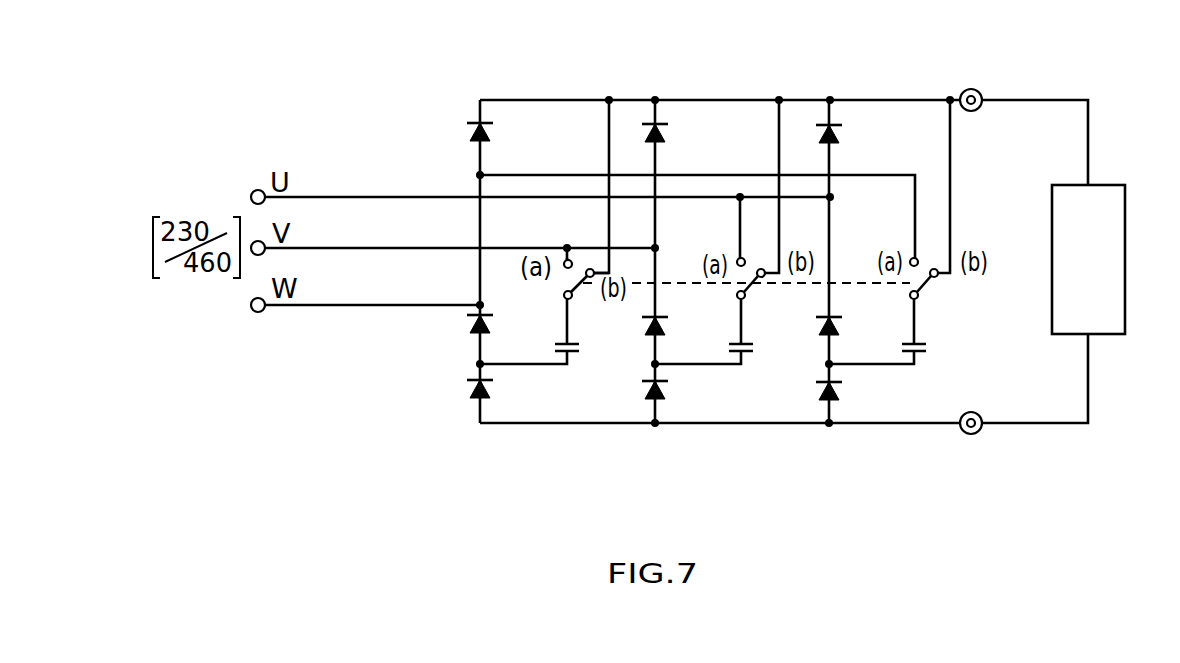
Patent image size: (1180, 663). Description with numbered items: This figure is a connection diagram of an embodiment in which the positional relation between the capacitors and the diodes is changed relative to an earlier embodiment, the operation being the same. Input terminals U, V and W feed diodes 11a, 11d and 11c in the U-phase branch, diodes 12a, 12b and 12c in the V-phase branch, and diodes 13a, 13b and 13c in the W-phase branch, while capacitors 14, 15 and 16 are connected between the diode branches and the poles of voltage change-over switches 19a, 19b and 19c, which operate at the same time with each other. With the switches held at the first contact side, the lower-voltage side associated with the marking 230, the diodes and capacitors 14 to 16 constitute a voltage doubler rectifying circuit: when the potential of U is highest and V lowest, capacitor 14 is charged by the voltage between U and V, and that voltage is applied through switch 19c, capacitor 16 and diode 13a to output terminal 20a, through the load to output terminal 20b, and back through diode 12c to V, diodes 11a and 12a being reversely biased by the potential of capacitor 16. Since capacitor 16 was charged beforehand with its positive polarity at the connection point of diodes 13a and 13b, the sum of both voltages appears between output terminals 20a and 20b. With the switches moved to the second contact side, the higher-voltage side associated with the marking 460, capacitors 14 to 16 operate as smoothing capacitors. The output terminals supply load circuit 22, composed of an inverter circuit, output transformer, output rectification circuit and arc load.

The diode 11a is at (470, 135).
The middle rectifier diode (phase U) 11d is at (466, 327).
The diode 11c is at (466, 389).
The diode 12a is at (665, 135).
The diode 12b is at (663, 330).
The diode 12c is at (650, 397).
The diode 13a is at (840, 137).
The diode 13b is at (838, 328).
The diode 13c is at (833, 398).
The capacitor 14 is at (575, 353).
The capacitor 15 is at (748, 352).
The capacitor 16 is at (920, 352).
The voltage change-over switch 19a is at (576, 286).
The voltage change-over switch 19b is at (748, 288).
The voltage change-over switch 19c is at (922, 288).
The output terminal 20a is at (977, 90).
The output terminal 20b is at (971, 434).
The load circuit 22 is at (1098, 190).
The 230 V switch position 230 is at (545, 236).
The 460 V switch position 460 is at (630, 273).